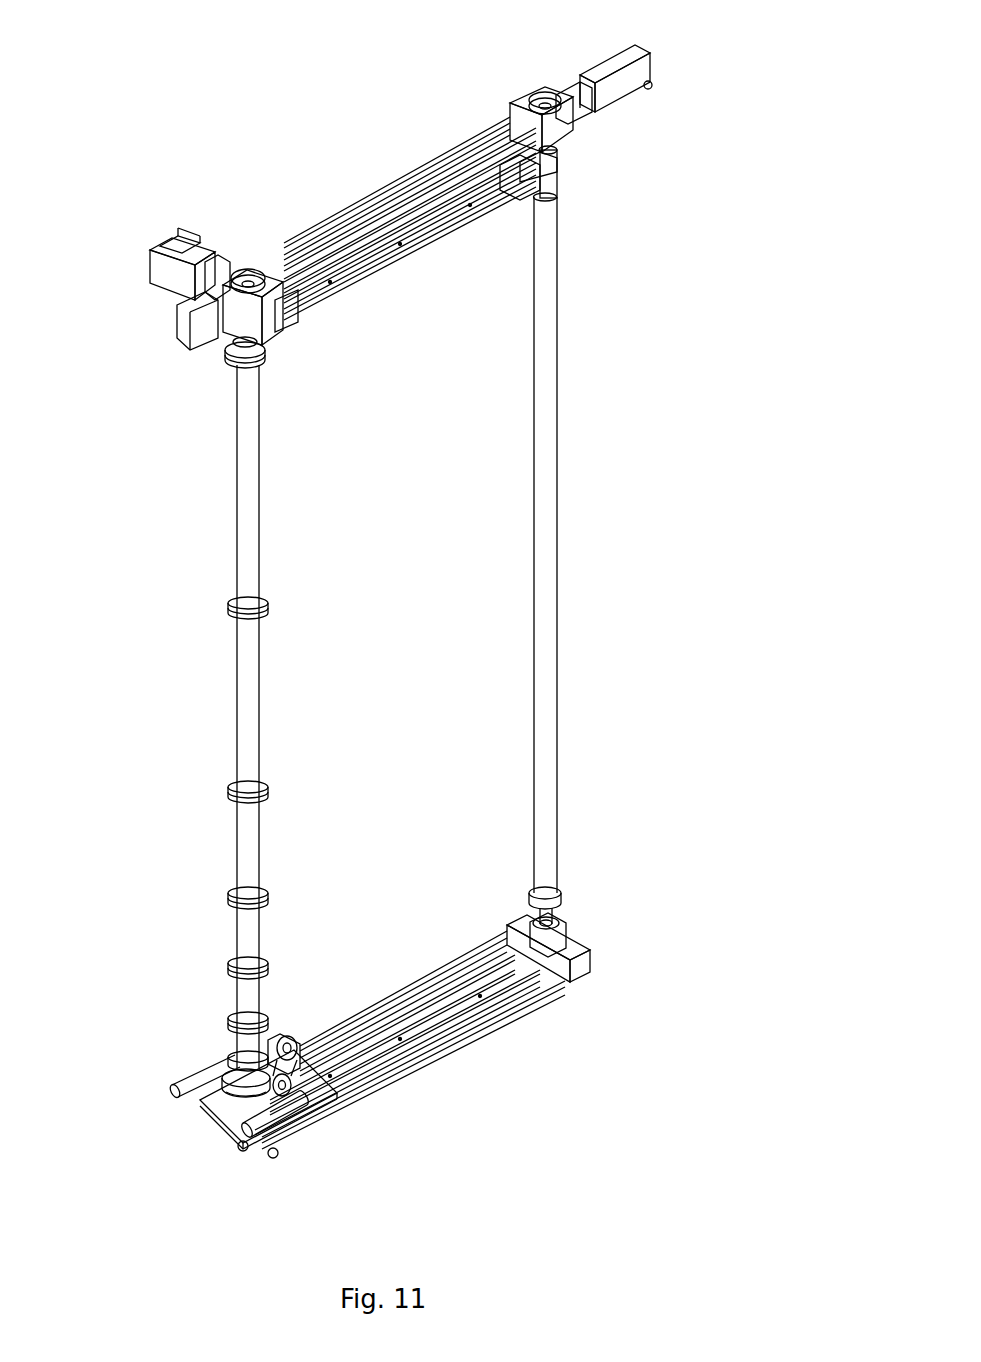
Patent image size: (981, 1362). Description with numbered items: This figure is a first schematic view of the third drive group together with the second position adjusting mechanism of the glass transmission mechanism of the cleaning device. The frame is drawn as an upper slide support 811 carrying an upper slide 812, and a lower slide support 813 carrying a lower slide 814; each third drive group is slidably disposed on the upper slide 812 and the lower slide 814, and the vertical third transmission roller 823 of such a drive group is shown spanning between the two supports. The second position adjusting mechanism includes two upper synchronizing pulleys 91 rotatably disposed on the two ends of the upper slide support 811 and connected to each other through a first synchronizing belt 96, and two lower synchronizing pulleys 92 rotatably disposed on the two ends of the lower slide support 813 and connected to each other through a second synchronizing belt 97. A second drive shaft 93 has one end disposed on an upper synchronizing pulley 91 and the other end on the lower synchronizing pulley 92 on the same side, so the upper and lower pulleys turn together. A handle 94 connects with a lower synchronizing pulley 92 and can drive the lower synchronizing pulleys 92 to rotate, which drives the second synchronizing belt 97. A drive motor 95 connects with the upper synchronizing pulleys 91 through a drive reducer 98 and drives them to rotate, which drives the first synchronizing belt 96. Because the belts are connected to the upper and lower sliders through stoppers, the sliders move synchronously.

The upper slide support 811 is at (375, 202).
The upper slide 812 is at (448, 157).
The lower slide support 813 is at (278, 1150).
The lower slide 814 is at (390, 1088).
The third transmission roller 823 is at (175, 283).
The upper synchronizing pulleys 91 is at (555, 183).
The lower synchronizing pulleys 92 is at (570, 975).
The second drive shaft 93 is at (545, 511).
The handle 94 is at (248, 1150).
The drive motor 95 is at (600, 112).
The first synchronizing belt 96 is at (405, 253).
The second synchronizing belt 97 is at (445, 1060).
The drive reducer 98 is at (572, 138).